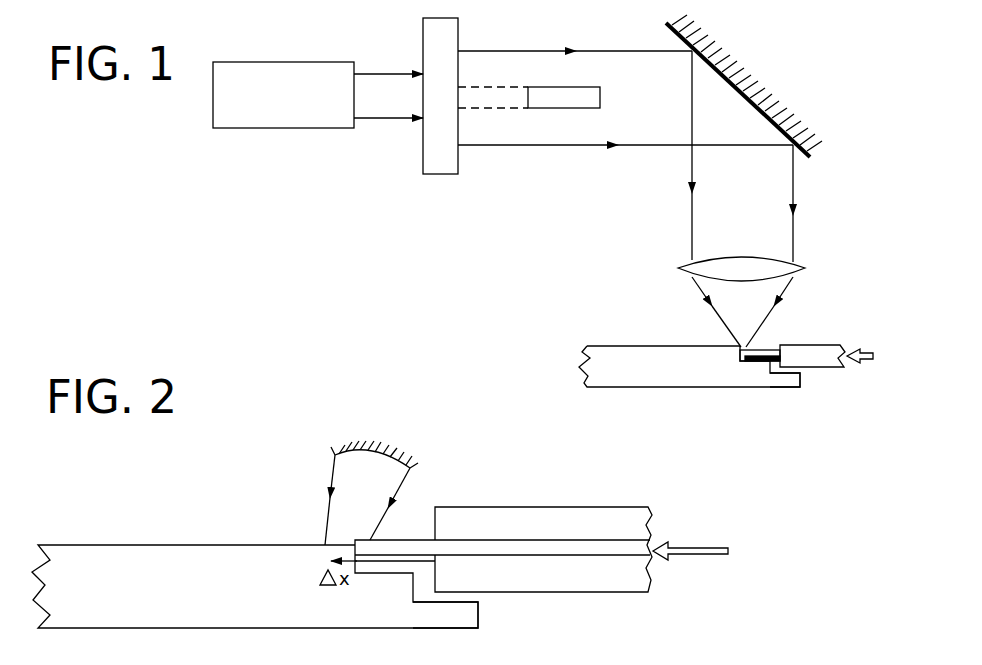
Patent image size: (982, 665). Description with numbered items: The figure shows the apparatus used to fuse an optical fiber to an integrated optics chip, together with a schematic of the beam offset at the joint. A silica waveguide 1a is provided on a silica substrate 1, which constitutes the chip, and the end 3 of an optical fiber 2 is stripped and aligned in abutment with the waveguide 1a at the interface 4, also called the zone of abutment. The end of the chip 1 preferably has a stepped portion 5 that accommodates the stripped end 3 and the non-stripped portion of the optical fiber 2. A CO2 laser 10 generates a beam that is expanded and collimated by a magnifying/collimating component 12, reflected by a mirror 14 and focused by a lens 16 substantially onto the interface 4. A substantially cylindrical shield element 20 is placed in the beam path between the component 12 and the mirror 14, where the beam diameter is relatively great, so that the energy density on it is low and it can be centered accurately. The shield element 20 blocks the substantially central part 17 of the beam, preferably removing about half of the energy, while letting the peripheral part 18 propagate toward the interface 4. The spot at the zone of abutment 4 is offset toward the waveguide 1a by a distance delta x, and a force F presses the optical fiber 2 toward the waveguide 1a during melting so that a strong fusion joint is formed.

In FIG. 1, the silica substrate 1 is at (675, 382).
In FIG. 2, the silica substrate 1 is at (222, 605).
In FIG. 1, the silica waveguide 1a is at (648, 345).
In FIG. 1, the optical fiber 2 is at (834, 368).
In FIG. 2, the optical fiber 2 is at (603, 585).
In FIG. 1, the end of the optical fiber 3 is at (763, 352).
In FIG. 2, the end of the optical fiber 3 is at (502, 550).
In FIG. 1, the interface 4 is at (736, 334).
In FIG. 1, the stepped portion 5 is at (783, 383).
In FIG. 2, the stepped portion 5 is at (452, 618).
In FIG. 1, the CO2 laser 10 is at (290, 70).
In FIG. 1, the magnifying/collimating component 12 is at (437, 35).
In FIG. 1, the mirror 14 is at (808, 160).
In FIG. 1, the lens 16 is at (748, 268).
In FIG. 1, the central part of the laser beam 17 is at (500, 86).
In FIG. 1, the peripheral part of the beam 18 is at (590, 128).
In FIG. 1, the shield element 20 is at (561, 100).